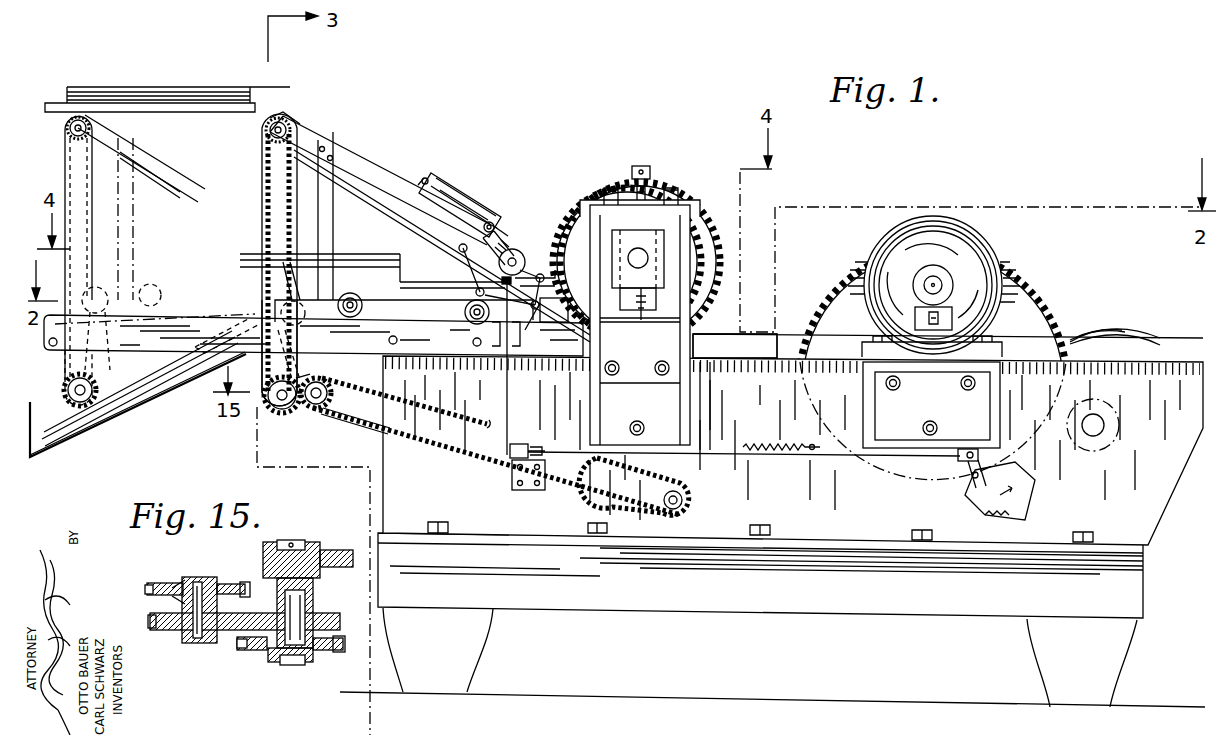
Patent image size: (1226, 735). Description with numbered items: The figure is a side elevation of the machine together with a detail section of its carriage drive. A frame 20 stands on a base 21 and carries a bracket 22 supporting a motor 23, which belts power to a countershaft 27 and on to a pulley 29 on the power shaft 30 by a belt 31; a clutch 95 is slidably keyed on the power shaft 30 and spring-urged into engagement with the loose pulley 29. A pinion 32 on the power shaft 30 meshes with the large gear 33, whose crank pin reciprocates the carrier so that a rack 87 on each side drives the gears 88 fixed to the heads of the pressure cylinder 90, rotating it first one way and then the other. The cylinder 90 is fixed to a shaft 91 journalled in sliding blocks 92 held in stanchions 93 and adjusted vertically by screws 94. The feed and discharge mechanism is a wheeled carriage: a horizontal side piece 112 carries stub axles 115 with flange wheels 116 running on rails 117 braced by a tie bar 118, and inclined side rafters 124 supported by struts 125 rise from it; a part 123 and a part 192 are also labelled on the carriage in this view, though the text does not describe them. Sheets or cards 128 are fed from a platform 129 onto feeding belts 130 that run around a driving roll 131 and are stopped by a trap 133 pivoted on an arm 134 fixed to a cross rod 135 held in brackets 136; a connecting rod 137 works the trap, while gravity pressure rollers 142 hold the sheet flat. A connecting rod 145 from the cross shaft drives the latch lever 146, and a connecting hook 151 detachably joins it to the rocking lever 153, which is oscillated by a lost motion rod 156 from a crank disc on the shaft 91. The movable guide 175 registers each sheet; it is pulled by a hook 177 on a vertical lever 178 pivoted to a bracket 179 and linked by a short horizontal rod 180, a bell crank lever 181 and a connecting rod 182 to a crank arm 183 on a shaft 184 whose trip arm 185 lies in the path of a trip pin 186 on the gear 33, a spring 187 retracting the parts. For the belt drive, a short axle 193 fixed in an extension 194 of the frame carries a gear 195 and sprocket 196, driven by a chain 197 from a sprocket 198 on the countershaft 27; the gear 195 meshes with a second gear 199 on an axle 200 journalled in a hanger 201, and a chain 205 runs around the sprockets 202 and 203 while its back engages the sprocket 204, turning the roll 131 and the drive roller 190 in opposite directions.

In FIG. 1, the frame 20 is at (1145, 525).
In FIG. 1, the base 21 is at (1130, 590).
In FIG. 1, the bracket 22 is at (875, 390).
In FIG. 1, the motor 23 is at (890, 236).
In FIG. 1, the countershaft 27 is at (690, 500).
In FIG. 1, the pulley 29 is at (1138, 333).
In FIG. 1, the power shaft 30 is at (1102, 433).
In FIG. 1, the belt 31 is at (1122, 338).
In FIG. 1, the pinion 32 is at (1100, 450).
In FIG. 1, the gear 33 is at (1050, 302).
In FIG. 1, the rack 87 is at (740, 350).
In FIG. 1, the gears 88 is at (566, 230).
In FIG. 1, the cylinder 90 is at (712, 236).
In FIG. 1, the shaft 91 is at (648, 258).
In FIG. 1, the sliding blocks 92 is at (655, 282).
In FIG. 1, the stanchions 93 is at (690, 208).
In FIG. 1, the screws 94 is at (632, 170).
In FIG. 1, the clutch 95 is at (1150, 350).
In FIG. 1, the horizontal side piece 112 is at (178, 312).
In FIG. 1, the trunnions or stub axles 115 is at (477, 326).
In FIG. 1, the flange wheels 116 is at (150, 284).
In FIG. 1, the rails 117 is at (222, 315).
In FIG. 1, the tie bar 118 is at (53, 347).
In FIG. 1, the bracket 123 is at (556, 340).
In FIG. 1, the inclined side rafters 124 is at (180, 172).
In FIG. 1, the struts 125 is at (134, 232).
In FIG. 1, the material sheets or cards 128 is at (100, 85).
In FIG. 1, the platform 129 is at (225, 113).
In FIG. 1, the feeding belts 130 is at (405, 228).
In FIG. 1, the driving roll 131 is at (296, 124).
In FIG. 1, the trap 133 is at (420, 188).
In FIG. 1, the arm 134 is at (470, 183).
In FIG. 1, the cross rod 135 is at (495, 222).
In FIG. 1, the brackets 136 is at (488, 220).
In FIG. 1, the connecting rod 137 is at (448, 195).
In FIG. 1, the gravity pressure rollers 142 is at (526, 262).
In FIG. 1, the connecting rod 145 is at (448, 290).
In FIG. 1, the latch lever 146 is at (290, 295).
In FIG. 1, the connecting hook 151 is at (430, 262).
In FIG. 1, the rocking lever 153 is at (492, 297).
In FIG. 1, the lost motion rod 156 is at (548, 278).
In FIG. 1, the movable guide 175 is at (507, 320).
In FIG. 1, the hook 177 is at (505, 242).
In FIG. 1, the vertical lever 178 is at (509, 411).
In FIG. 1, the bracket 179 is at (495, 360).
In FIG. 1, the short horizontal rod 180 is at (470, 455).
In FIG. 1, the bell crank lever 181 is at (525, 446).
In FIG. 1, the connecting rod 182 is at (797, 460).
In FIG. 1, the crank arm 183 is at (960, 465).
In FIG. 1, the shaft 184 is at (972, 488).
In FIG. 1, the trip arm 185 is at (975, 512).
In FIG. 1, the trip pin 186 is at (1010, 508).
In FIG. 1, the spring 187 is at (773, 440).
In FIG. 1, the drive roller 190 is at (298, 318).
In FIG. 1, the delivery plate 192 is at (138, 405).
In FIG. 1, the short axle 193 is at (315, 408).
In FIG. 15, the short axle 193 is at (300, 622).
In FIG. 1, the extension 194 is at (378, 386).
In FIG. 15, the extension 194 is at (340, 552).
In FIG. 15, the gear 195 is at (270, 662).
In FIG. 1, the sprocket 196 is at (342, 428).
In FIG. 15, the sprocket 196 is at (322, 655).
In FIG. 1, the chain 197 is at (445, 450).
In FIG. 15, the chain 197 is at (245, 648).
In FIG. 1, the sprocket 198 is at (655, 490).
In FIG. 1, the second gear 199 is at (100, 400).
In FIG. 15, the second gear 199 is at (178, 635).
In FIG. 1, the axle 200 is at (65, 395).
In FIG. 15, the axle 200 is at (198, 642).
In FIG. 1, the hanger 201 is at (305, 372).
In FIG. 15, the hanger 201 is at (183, 585).
In FIG. 15, the sprocket 202 is at (232, 582).
In FIG. 1, the sprocket 203 is at (68, 138).
In FIG. 1, the sprocket 204 is at (103, 290).
In FIG. 1, the chain 205 is at (65, 175).
In FIG. 15, the chain 205 is at (146, 580).